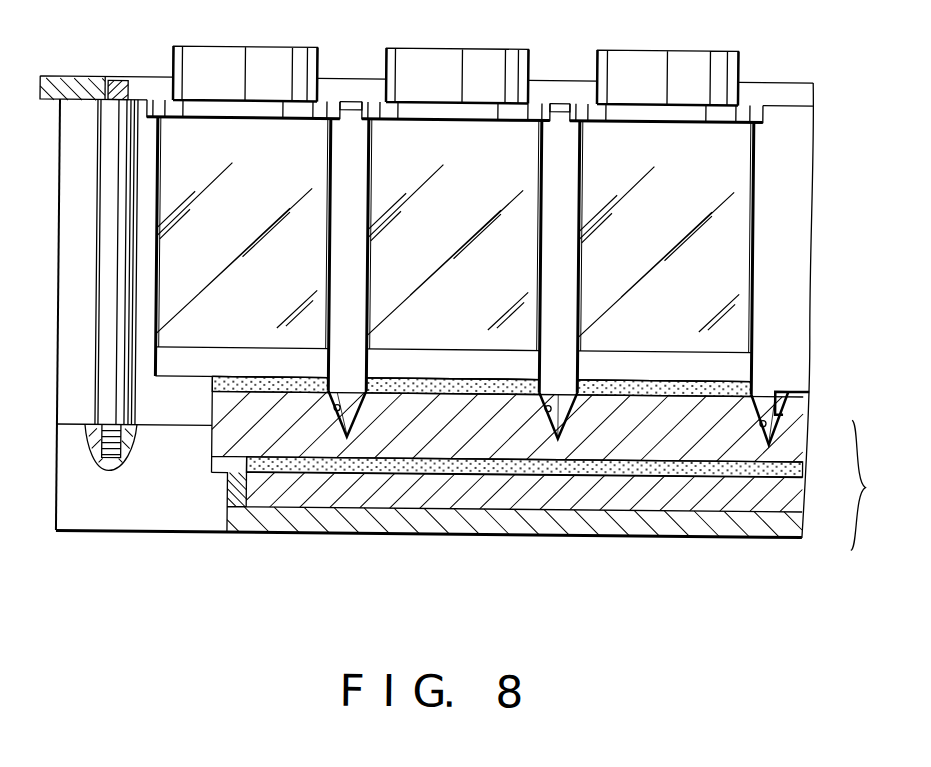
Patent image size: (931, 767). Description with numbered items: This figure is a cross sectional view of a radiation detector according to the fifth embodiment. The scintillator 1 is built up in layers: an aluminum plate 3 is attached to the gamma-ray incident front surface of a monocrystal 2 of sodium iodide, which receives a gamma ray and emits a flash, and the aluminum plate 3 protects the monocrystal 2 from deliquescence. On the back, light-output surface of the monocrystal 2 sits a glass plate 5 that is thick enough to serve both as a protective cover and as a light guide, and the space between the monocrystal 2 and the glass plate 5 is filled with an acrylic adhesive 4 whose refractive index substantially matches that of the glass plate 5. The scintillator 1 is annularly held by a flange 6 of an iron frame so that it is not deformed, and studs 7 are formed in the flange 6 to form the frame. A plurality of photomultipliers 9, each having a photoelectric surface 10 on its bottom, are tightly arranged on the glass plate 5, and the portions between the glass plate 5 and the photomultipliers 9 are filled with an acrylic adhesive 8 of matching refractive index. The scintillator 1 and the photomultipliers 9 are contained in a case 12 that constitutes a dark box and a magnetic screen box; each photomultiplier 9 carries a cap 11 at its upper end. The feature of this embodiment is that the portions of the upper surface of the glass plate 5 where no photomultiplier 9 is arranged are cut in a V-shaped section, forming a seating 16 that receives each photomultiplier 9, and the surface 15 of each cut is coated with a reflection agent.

The scintillator 1 is at (868, 485).
The monocrystal 2 is at (795, 488).
The aluminum plate 3 is at (802, 520).
The acrylic adhesive 4 is at (795, 463).
The glass plate 5 is at (802, 418).
The flange 6 is at (163, 519).
The stud 7 is at (99, 394).
The acrylic adhesive 8 is at (325, 382).
The photomultiplier 9 is at (332, 232).
The photoelectric surface 10 is at (306, 348).
The cap 11 is at (279, 49).
The case 12 is at (60, 323).
The surface of the cut 15 is at (343, 406).
The seating 16 is at (370, 414).